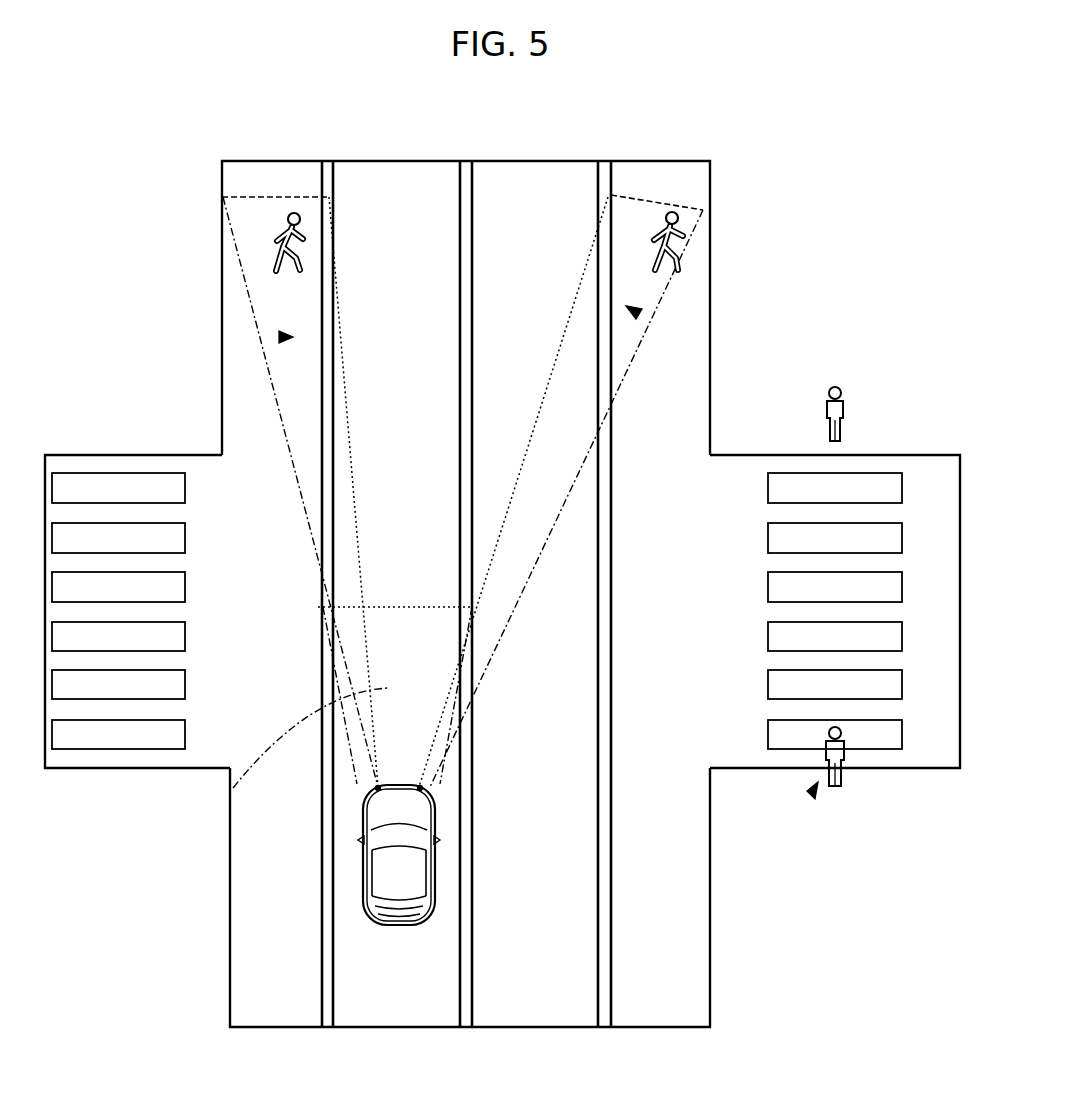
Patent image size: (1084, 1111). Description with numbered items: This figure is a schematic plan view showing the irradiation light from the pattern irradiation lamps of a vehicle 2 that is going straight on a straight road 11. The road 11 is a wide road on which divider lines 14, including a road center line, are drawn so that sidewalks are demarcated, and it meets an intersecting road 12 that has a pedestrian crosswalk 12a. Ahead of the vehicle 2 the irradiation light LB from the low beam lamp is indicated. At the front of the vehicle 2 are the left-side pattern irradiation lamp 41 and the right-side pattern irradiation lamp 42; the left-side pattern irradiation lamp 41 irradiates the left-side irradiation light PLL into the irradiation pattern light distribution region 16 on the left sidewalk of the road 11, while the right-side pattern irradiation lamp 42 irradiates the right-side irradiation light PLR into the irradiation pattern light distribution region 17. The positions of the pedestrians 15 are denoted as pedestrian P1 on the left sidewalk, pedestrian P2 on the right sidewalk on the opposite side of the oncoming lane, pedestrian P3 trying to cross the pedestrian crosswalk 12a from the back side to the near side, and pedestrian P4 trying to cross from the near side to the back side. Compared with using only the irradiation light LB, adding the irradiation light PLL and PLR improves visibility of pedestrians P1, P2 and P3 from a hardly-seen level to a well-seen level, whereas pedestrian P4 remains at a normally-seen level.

The vehicle 2 is at (388, 878).
The road 11 is at (382, 168).
The road 12 is at (733, 468).
The pedestrian crosswalk 12a is at (778, 734).
The divider lines 14 is at (323, 247).
The pedestrian 15 is at (812, 798).
The irradiation pattern light distribution region 16 is at (280, 337).
The irradiation pattern light distribution region 17 is at (640, 313).
The left-side pattern irradiation lamp 41 is at (367, 793).
The right-side pattern irradiation lamp 42 is at (427, 793).
The pedestrian P1 is at (287, 228).
The pedestrian P2 is at (686, 226).
The pedestrian P3 is at (840, 388).
The pedestrian P4 is at (845, 775).
The left-side irradiation light PLL is at (303, 400).
The right-side irradiation light PLR is at (580, 396).
The irradiation light LB is at (232, 789).